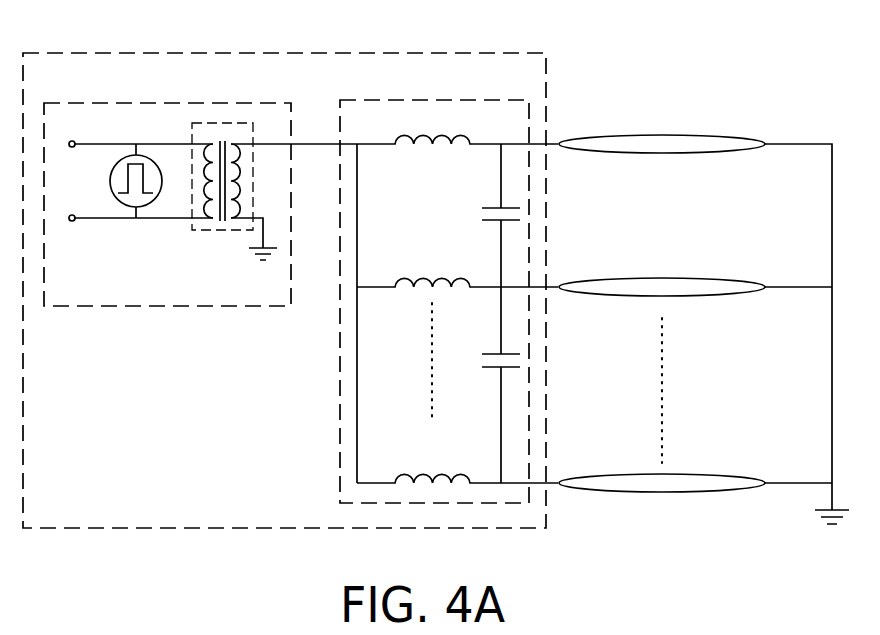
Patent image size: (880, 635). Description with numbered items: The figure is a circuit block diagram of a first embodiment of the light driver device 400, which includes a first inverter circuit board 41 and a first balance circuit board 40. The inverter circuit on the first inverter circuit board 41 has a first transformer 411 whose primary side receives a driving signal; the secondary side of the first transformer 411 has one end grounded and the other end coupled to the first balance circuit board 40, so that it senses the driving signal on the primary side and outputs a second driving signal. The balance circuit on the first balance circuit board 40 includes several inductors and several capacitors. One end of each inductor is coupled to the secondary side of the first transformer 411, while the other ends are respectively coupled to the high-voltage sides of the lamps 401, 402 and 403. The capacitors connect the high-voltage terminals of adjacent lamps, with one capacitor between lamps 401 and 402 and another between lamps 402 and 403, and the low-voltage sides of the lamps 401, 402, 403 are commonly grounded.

The light driver device 400 is at (350, 53).
The first balance circuit board 40 is at (367, 100).
The first inverter circuit board 41 is at (103, 103).
The first transformer 411 is at (230, 233).
The lamp 401 is at (677, 133).
The lamp 402 is at (677, 277).
The lamp 403 is at (677, 473).